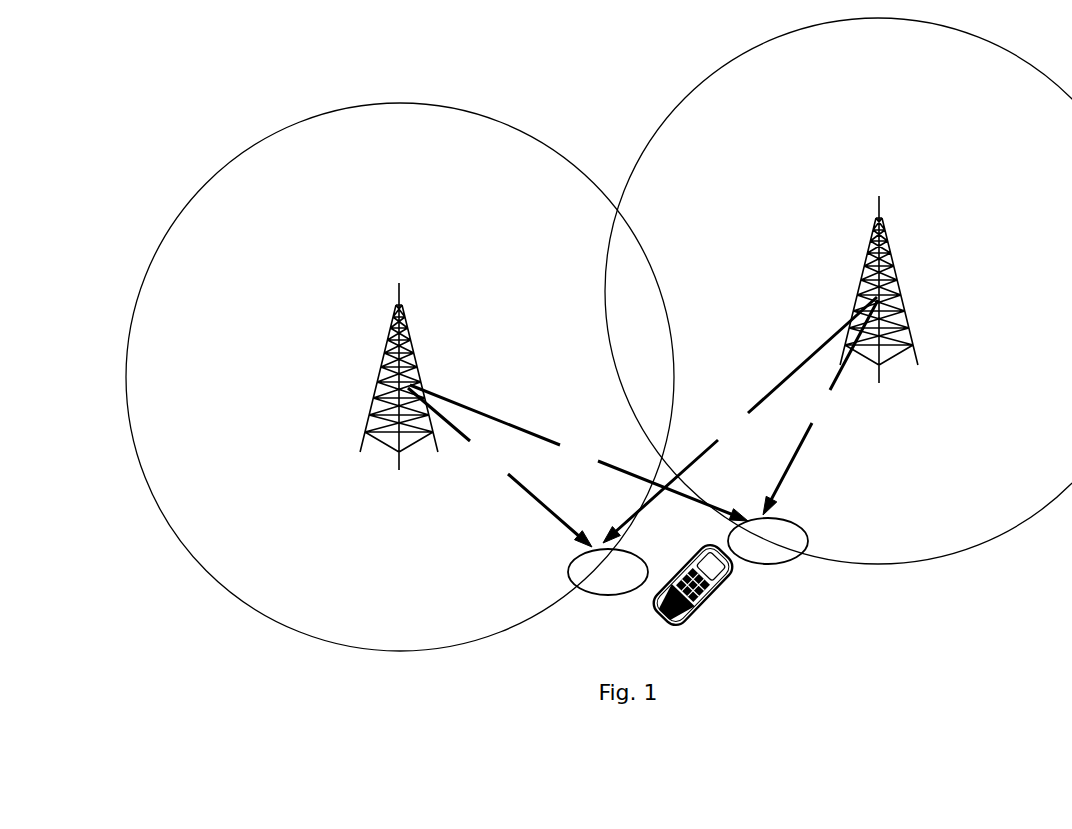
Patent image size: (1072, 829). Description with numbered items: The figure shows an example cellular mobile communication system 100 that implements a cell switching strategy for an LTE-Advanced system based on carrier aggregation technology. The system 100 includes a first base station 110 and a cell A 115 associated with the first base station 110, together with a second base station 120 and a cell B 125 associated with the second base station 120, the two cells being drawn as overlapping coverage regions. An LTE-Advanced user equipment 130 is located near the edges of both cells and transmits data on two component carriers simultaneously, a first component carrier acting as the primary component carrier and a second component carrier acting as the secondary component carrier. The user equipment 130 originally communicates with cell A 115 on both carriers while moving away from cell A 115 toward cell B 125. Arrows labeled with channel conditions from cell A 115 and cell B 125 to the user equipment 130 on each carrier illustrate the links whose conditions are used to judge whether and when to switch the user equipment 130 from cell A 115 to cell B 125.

The cellular mobile communication system 100 is at (577, 29).
The first base station 110 is at (385, 348).
The cell A 115 is at (247, 150).
The second base station 120 is at (868, 258).
The cell B 125 is at (698, 87).
The LTE-Advanced user equipment 130 is at (722, 590).